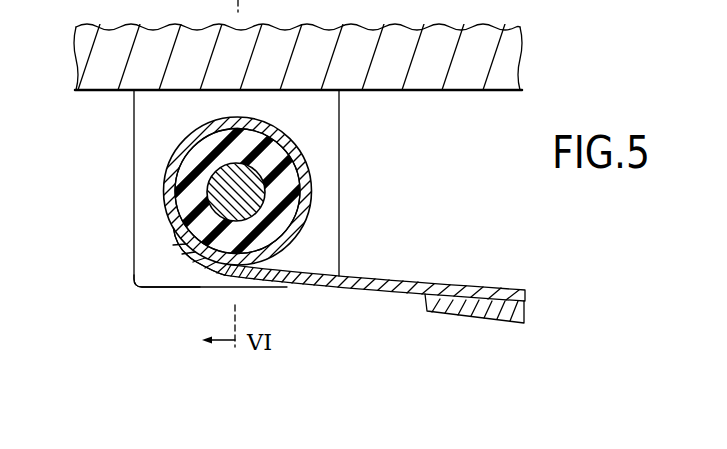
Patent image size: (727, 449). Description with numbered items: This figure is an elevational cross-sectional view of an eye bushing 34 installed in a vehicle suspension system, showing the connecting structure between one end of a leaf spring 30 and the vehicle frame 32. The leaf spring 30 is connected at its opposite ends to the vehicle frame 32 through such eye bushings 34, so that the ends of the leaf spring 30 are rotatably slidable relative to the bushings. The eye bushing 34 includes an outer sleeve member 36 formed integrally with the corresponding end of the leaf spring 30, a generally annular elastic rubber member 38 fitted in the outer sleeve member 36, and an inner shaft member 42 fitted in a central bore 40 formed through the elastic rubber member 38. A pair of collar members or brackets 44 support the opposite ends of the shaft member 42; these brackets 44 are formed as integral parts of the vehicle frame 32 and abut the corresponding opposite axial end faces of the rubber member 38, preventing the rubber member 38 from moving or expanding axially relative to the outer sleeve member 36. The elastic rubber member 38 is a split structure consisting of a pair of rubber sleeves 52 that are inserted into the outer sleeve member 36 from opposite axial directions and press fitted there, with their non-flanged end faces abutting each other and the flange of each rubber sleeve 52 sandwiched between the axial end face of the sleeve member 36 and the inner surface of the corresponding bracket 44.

The leaf spring 30 is at (483, 272).
The vehicle frame 32 is at (475, 40).
The eye bushing 34 is at (116, 223).
The outer sleeve member 36 is at (303, 178).
The elastic rubber member 38 is at (300, 140).
The central bore 40 is at (213, 180).
The inner shaft member 42 is at (195, 238).
The bracket 44 is at (147, 261).
The rubber sleeve 52 is at (283, 226).